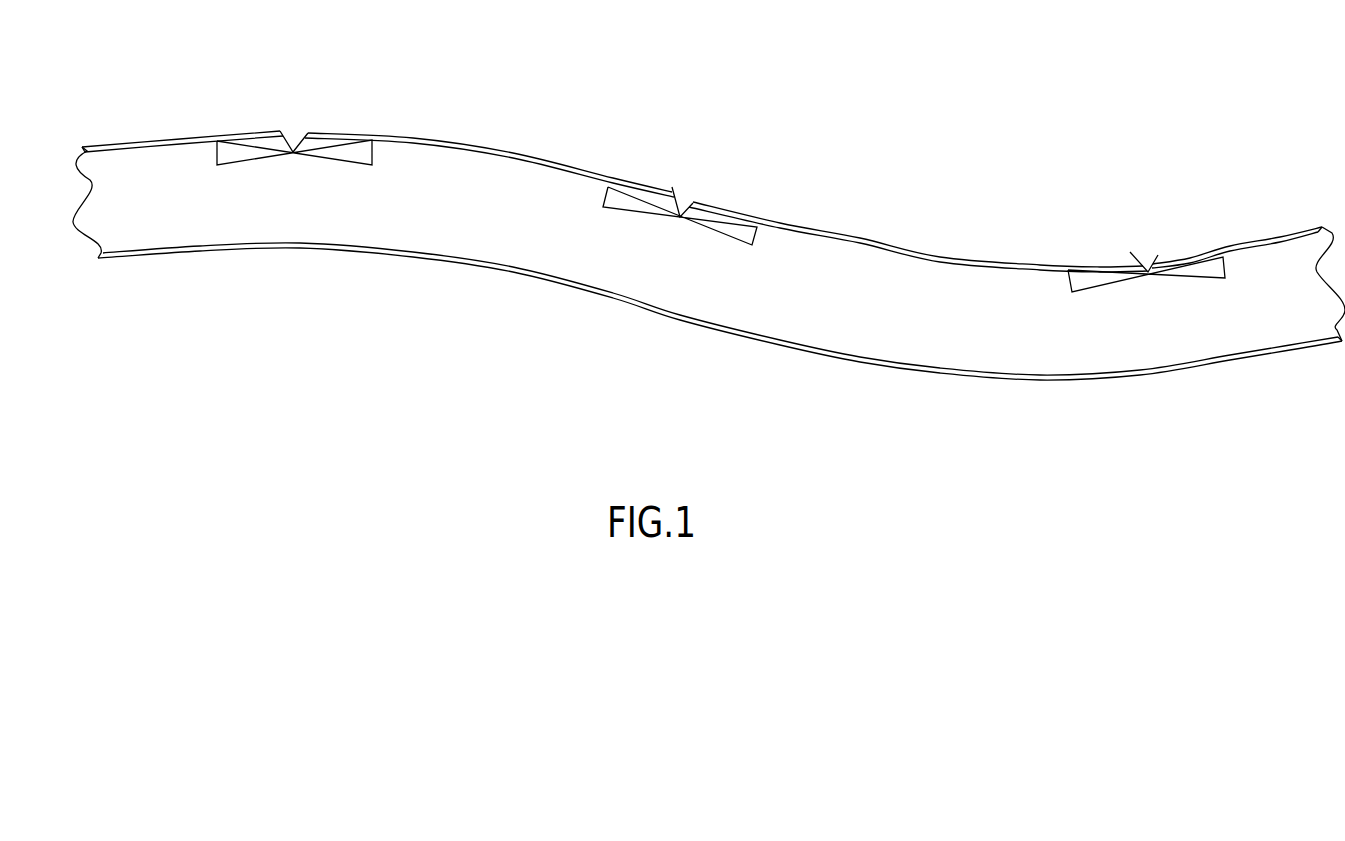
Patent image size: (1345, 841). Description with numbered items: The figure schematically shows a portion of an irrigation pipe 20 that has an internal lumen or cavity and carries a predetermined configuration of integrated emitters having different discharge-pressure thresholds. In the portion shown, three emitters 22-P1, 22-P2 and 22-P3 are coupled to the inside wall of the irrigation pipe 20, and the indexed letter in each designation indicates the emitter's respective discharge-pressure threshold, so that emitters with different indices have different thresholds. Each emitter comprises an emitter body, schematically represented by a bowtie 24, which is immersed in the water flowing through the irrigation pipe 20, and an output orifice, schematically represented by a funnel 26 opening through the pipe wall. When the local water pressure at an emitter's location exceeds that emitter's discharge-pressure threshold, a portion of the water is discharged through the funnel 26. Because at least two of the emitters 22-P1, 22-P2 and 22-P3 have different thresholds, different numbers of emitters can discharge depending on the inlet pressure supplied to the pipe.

The irrigation pipe 20 is at (825, 228).
The emitter with discharge-pressure threshold P1 22-P1 is at (227, 117).
The emitter with discharge-pressure threshold P2 22-P2 is at (1063, 238).
The emitter with discharge-pressure threshold P3 22-P3 is at (633, 167).
The bowtie 24 is at (341, 165).
The funnel 26 is at (308, 133).